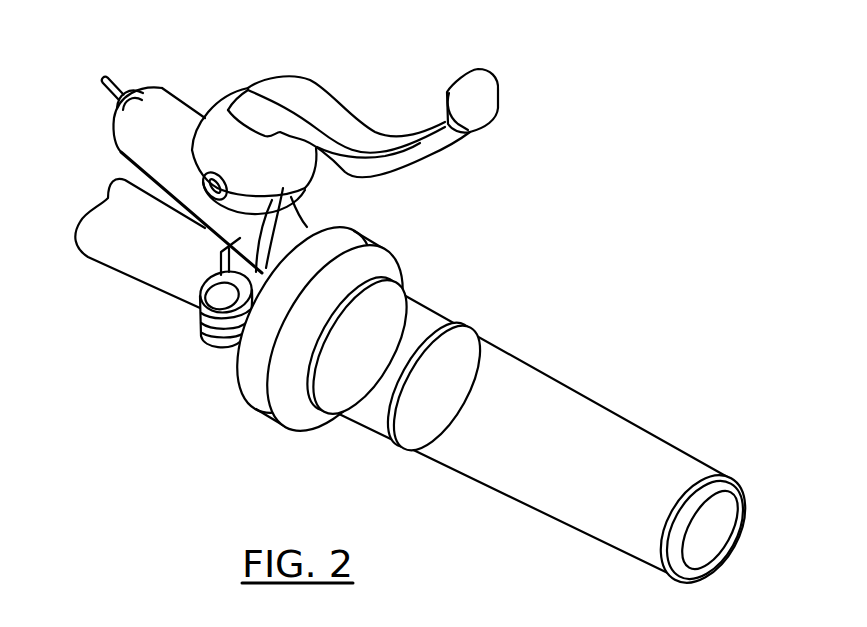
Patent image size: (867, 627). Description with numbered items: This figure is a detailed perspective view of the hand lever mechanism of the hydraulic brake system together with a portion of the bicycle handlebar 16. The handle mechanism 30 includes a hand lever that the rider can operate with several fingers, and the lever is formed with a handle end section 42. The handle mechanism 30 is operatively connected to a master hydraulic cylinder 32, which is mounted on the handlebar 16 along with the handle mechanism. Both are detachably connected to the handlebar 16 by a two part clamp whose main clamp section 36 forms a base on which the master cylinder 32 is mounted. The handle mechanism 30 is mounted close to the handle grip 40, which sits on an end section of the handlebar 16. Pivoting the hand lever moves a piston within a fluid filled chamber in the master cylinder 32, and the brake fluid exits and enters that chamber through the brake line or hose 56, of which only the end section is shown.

The handlebar 16 is at (120, 250).
The handle mechanism 30 is at (331, 103).
The master hydraulic cylinder 32 is at (174, 107).
The main clamp section 36 is at (212, 297).
The handle grip 40 is at (643, 447).
The handle end section 42 is at (293, 163).
The brake line or hose 56 is at (114, 74).